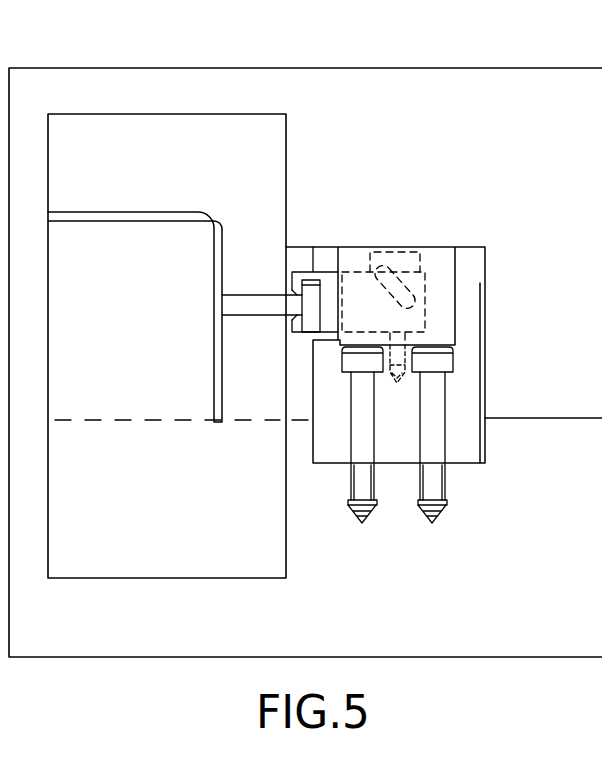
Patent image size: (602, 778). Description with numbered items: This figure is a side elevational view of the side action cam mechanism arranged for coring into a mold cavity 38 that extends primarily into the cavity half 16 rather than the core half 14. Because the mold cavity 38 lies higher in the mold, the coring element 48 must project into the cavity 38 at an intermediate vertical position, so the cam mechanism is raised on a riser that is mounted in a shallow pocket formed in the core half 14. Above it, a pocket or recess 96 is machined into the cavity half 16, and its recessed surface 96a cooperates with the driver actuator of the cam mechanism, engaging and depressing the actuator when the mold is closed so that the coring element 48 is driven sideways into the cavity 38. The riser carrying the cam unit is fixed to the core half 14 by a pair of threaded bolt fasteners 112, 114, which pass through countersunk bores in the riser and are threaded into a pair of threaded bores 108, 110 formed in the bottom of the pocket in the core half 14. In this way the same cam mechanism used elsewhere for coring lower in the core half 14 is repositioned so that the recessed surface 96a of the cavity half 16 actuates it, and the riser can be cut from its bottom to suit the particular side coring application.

The core half 14 is at (442, 632).
The cavity half 16 is at (420, 103).
The mold cavity 38 is at (217, 213).
The coring element 48 is at (252, 293).
The pocket or recess 96 is at (481, 287).
The recessed surface 96a is at (306, 252).
The threaded bore 108 is at (350, 512).
The threaded bore 110 is at (417, 512).
The threaded bolt fastener 112 is at (358, 470).
The threaded bolt fastener 114 is at (443, 480).